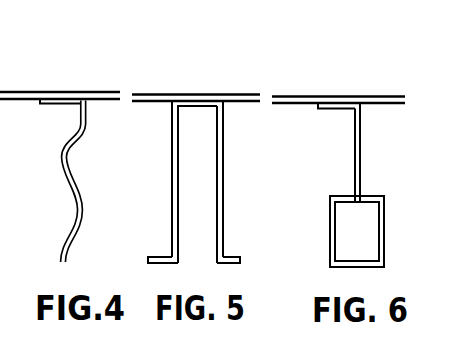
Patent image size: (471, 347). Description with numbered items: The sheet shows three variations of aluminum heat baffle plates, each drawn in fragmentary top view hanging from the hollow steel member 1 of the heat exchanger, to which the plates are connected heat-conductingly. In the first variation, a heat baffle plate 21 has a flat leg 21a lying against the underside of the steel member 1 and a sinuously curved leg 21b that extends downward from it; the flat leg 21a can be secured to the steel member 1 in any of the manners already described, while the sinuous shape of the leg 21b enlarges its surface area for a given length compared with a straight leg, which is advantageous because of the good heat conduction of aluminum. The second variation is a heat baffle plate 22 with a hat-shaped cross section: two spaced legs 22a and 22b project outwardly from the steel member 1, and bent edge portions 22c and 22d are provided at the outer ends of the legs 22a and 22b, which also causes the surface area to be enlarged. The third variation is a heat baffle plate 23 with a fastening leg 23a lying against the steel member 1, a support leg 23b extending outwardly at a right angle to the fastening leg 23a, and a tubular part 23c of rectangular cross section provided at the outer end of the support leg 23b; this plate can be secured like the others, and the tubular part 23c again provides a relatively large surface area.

In FIG. 4, the hollow steel member 1 is at (85, 90).
In FIG. 5, the hollow steel member 1 is at (210, 96).
In FIG. 6, the hollow steel member 1 is at (368, 97).
In FIG. 4, the heat baffle plate 21 is at (52, 142).
In FIG. 4, the flat leg 21a is at (55, 102).
In FIG. 4, the sinuously curved leg 21b is at (60, 159).
In FIG. 5, the heat baffle plate 22 is at (199, 142).
In FIG. 5, the leg 22a is at (192, 103).
In FIG. 5, the leg 22b is at (222, 166).
In FIG. 5, the bent edge portion 22c is at (165, 255).
In FIG. 5, the bent edge portion 22d is at (238, 256).
In FIG. 6, the heat baffle plate 23 is at (359, 156).
In FIG. 6, the fastening leg 23a is at (333, 105).
In FIG. 6, the support leg 23b is at (355, 140).
In FIG. 6, the tubular part 23c is at (384, 212).